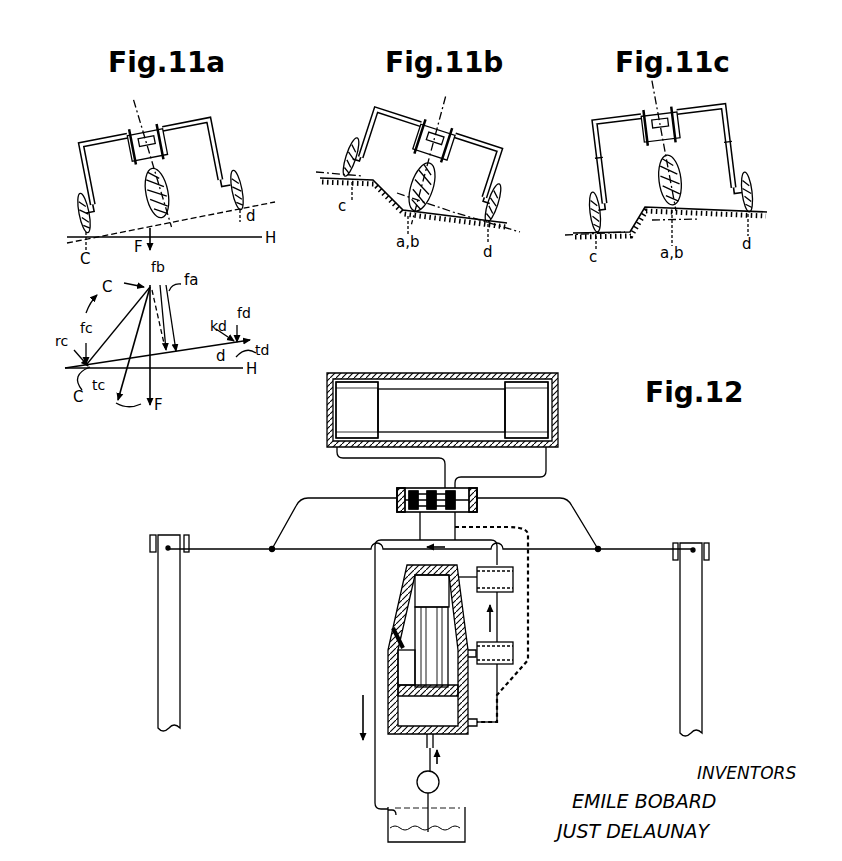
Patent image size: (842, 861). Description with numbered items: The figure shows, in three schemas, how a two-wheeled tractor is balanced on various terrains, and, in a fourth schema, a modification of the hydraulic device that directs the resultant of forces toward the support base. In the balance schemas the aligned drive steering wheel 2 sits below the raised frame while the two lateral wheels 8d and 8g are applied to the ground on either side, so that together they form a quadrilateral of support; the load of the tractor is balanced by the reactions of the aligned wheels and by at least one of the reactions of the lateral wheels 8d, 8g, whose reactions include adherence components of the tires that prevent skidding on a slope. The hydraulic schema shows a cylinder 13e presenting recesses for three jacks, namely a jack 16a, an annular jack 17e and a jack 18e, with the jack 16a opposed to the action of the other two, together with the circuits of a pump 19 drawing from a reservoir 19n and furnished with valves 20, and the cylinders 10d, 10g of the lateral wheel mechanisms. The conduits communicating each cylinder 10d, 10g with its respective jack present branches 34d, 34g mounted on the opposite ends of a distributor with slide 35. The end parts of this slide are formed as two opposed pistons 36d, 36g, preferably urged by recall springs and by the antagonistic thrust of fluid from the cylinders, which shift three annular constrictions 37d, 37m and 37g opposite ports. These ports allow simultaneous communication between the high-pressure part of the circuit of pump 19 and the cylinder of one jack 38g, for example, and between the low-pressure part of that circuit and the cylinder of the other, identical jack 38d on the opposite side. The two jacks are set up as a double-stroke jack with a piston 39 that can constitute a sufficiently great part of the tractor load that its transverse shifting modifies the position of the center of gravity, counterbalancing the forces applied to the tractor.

In FIG. 11a, the drive steering wheel 2 is at (156, 192).
In FIG. 11b, the drive steering wheel 2 is at (411, 174).
In FIG. 11c, the drive steering wheel 2 is at (659, 178).
In FIG. 11a, the left lateral wheel 8g is at (81, 196).
In FIG. 11b, the left lateral wheel 8g is at (346, 145).
In FIG. 11c, the left lateral wheel 8g is at (588, 197).
In FIG. 11a, the right lateral wheel 8d is at (236, 178).
In FIG. 11b, the right lateral wheel 8d is at (500, 195).
In FIG. 11c, the right lateral wheel 8d is at (747, 178).
In FIG. 12, the piston 39 is at (447, 384).
In FIG. 12, the jack 38g is at (345, 412).
In FIG. 12, the jack 38d is at (540, 421).
In FIG. 12, the distributor with slide 35 is at (393, 505).
In FIG. 12, the opposed piston 36g is at (400, 489).
In FIG. 12, the opposed piston 36d is at (472, 489).
In FIG. 12, the middle annular constriction 37m is at (436, 488).
In FIG. 12, the annular constriction 37g is at (478, 509).
In FIG. 12, the annular constriction 37d is at (404, 512).
In FIG. 12, the branch 34g is at (270, 546).
In FIG. 12, the branch 34d is at (600, 547).
In FIG. 12, the cylinder 10g is at (158, 651).
In FIG. 12, the cylinder 10d is at (696, 657).
In FIG. 12, the jack 18e is at (418, 581).
In FIG. 12, the cylinder 13e is at (408, 614).
In FIG. 12, the annular jack 17e is at (406, 662).
In FIG. 12, the jack 16a is at (420, 668).
In FIG. 12, the valve 20 is at (514, 580).
In FIG. 12, the pump 19 is at (440, 787).
In FIG. 12, the oil tank 19n is at (466, 832).